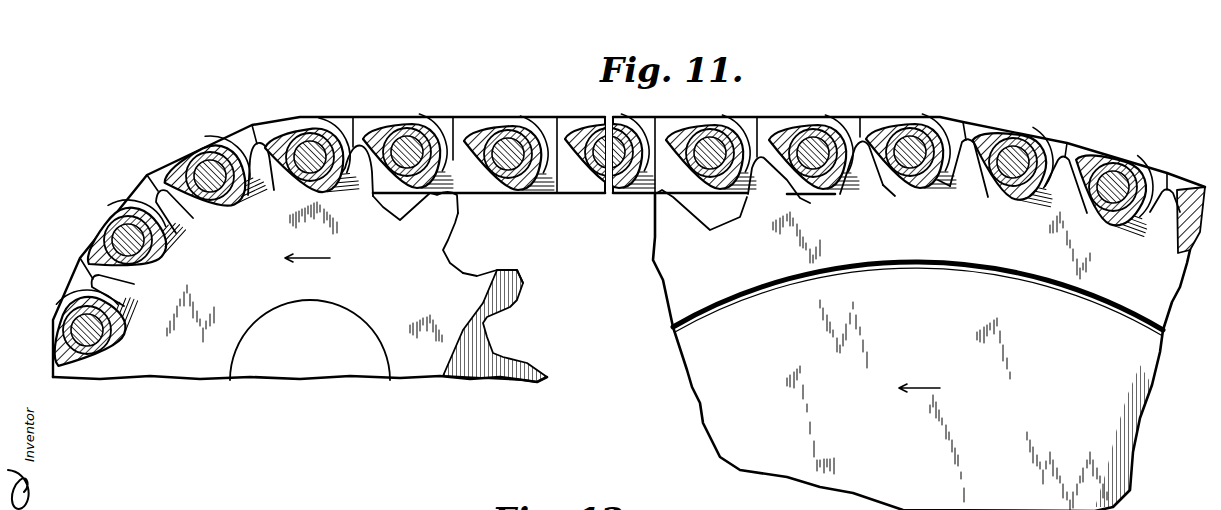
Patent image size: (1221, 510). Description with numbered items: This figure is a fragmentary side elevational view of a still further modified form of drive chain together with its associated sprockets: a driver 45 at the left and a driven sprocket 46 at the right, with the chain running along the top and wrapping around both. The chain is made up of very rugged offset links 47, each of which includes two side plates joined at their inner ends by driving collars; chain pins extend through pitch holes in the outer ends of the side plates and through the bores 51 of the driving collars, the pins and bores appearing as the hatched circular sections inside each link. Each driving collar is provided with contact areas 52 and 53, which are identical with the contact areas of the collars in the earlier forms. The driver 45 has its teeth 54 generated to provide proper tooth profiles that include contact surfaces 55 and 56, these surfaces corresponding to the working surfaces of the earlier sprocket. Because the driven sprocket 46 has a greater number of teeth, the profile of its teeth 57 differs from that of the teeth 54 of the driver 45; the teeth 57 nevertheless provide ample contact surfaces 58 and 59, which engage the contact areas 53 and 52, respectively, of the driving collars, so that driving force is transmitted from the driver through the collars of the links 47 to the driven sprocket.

The driver 45 is at (435, 380).
The driven sprocket 46 is at (692, 388).
The offset link 47 is at (480, 122).
The bore 51 is at (305, 140).
The contact area 52 is at (536, 193).
The contact area 53 is at (466, 157).
The teeth 54 is at (525, 284).
The contact surface 55 is at (478, 275).
The contact surface 56 is at (459, 214).
The teeth 57 is at (864, 140).
The contact surface 58 is at (870, 182).
The contact surface 59 is at (943, 190).